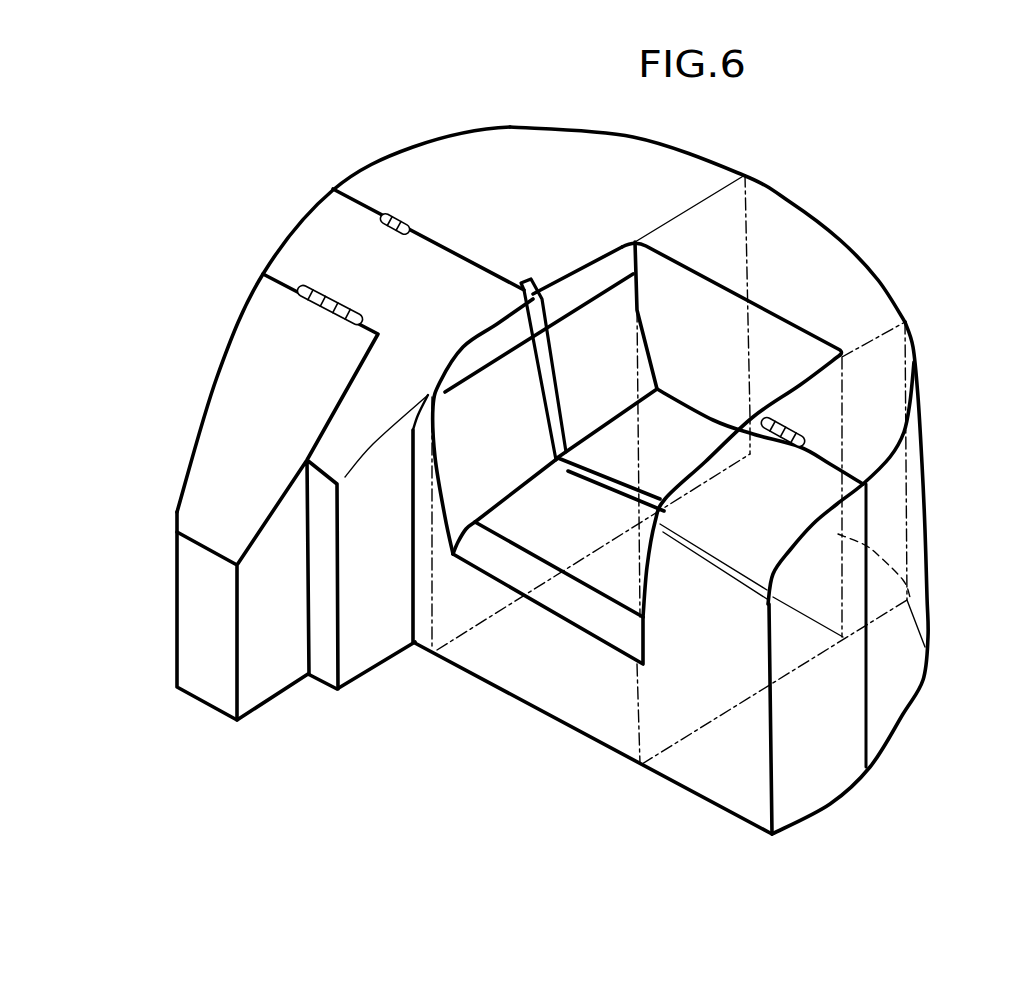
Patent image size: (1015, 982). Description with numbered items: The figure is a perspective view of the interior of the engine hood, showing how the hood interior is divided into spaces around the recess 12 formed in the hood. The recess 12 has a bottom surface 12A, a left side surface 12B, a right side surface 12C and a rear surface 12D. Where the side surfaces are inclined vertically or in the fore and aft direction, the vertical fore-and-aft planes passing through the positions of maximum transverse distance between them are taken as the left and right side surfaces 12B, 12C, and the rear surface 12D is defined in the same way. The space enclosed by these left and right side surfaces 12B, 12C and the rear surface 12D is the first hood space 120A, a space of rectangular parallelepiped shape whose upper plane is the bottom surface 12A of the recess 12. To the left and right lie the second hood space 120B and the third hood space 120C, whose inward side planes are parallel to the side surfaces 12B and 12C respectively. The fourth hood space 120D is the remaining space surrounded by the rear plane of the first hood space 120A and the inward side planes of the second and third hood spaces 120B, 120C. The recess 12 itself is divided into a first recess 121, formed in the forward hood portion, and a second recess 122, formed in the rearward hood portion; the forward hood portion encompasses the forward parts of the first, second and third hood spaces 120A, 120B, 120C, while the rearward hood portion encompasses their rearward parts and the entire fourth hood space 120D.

The recess 12 is at (612, 318).
The bottom surface 12A is at (610, 583).
The left side surface 12B is at (780, 400).
The right side surface 12C is at (507, 383).
The rear surface 12D is at (708, 312).
The first recess 121 is at (548, 500).
The second recess 122 is at (625, 440).
The first hood space 120A is at (597, 688).
The second hood space 120B is at (820, 737).
The third hood space 120C is at (463, 227).
The fourth hood space 120D is at (827, 297).